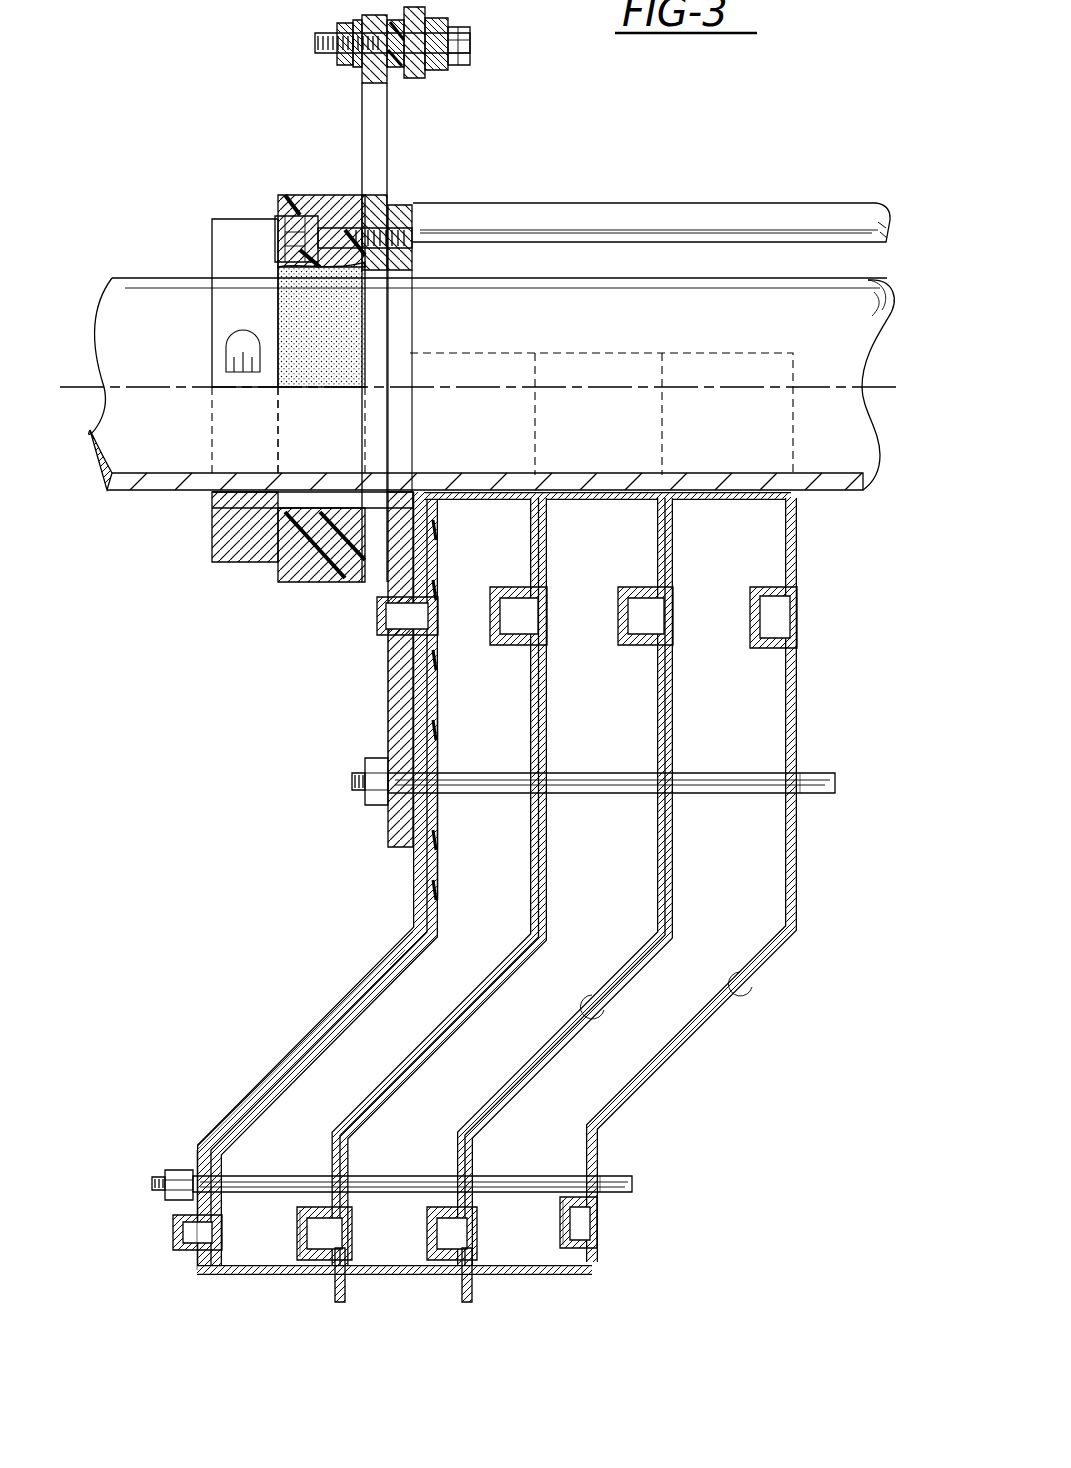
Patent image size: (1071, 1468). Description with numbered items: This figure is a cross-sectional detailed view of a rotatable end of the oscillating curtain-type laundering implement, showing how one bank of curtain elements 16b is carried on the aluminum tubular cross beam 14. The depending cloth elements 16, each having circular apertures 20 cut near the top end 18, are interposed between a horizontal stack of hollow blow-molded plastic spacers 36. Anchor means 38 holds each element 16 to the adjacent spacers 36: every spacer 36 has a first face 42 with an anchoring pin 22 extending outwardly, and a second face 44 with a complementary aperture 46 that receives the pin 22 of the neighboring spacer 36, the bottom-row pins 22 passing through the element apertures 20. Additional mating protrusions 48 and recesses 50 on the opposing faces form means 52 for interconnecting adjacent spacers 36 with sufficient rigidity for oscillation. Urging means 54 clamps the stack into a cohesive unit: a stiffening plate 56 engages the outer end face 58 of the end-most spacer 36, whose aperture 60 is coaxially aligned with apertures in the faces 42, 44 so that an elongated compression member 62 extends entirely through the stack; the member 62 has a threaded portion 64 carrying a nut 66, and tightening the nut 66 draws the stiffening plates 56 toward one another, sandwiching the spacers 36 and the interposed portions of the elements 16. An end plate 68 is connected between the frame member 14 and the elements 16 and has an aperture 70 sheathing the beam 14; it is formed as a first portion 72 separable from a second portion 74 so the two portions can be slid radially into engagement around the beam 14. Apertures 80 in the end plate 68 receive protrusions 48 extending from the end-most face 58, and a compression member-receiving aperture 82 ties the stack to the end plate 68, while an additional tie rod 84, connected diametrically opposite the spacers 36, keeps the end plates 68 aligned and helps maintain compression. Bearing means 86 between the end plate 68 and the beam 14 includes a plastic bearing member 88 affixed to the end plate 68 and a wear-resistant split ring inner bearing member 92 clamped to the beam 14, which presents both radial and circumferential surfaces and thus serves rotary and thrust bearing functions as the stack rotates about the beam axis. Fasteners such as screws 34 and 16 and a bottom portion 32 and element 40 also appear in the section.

The tubular cross beam 14 is at (120, 305).
The cloth curtain element 16 is at (472, 1290).
The right bank of curtain elements 16b is at (238, 1023).
The top end 18 is at (328, 1206).
The circular apertures 20 is at (342, 1245).
The anchoring pin 22 is at (300, 1215).
The bottom wall 32 is at (330, 1290).
The screw 34 is at (346, 1290).
The spacer 36 is at (758, 875).
The anchor means 38 is at (443, 1206).
The channel member 40 is at (472, 1213).
The first face 42 is at (600, 985).
The second face 44 is at (746, 975).
The complementary aperture 46 is at (600, 1232).
The mating protrusion 48 is at (378, 604).
The recess or aperture 50 is at (800, 608).
The means for interconnecting adjacent spacers 52 is at (626, 583).
The urging means 54 is at (623, 758).
The stiffening plate 56 is at (345, 990).
The outer end face 58 is at (385, 978).
The aperture 60 is at (430, 780).
The compression member 62 is at (825, 778).
The threaded portion 64 is at (385, 790).
The nut 66 is at (360, 772).
The end plate 68 is at (400, 712).
The aperture 70 is at (412, 498).
The first portion 72 is at (370, 145).
The second portion 74 is at (390, 662).
The additional apertures 80 is at (420, 600).
The compression member-receiving aperture 82 is at (432, 800).
The additional tie rod 84 is at (680, 215).
The bearing means 86 is at (213, 157).
The plastic bearing member 88 is at (290, 585).
The split ring inner bearing member 92 is at (215, 575).